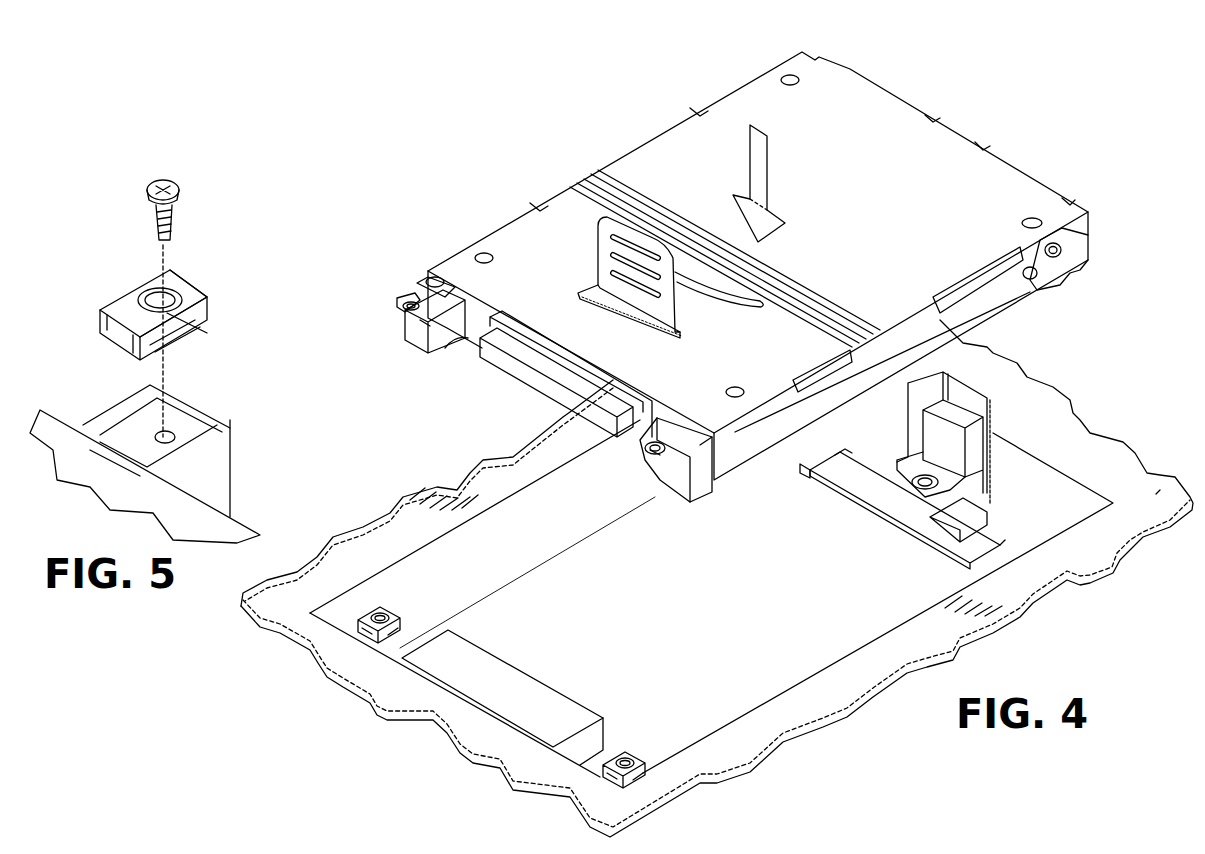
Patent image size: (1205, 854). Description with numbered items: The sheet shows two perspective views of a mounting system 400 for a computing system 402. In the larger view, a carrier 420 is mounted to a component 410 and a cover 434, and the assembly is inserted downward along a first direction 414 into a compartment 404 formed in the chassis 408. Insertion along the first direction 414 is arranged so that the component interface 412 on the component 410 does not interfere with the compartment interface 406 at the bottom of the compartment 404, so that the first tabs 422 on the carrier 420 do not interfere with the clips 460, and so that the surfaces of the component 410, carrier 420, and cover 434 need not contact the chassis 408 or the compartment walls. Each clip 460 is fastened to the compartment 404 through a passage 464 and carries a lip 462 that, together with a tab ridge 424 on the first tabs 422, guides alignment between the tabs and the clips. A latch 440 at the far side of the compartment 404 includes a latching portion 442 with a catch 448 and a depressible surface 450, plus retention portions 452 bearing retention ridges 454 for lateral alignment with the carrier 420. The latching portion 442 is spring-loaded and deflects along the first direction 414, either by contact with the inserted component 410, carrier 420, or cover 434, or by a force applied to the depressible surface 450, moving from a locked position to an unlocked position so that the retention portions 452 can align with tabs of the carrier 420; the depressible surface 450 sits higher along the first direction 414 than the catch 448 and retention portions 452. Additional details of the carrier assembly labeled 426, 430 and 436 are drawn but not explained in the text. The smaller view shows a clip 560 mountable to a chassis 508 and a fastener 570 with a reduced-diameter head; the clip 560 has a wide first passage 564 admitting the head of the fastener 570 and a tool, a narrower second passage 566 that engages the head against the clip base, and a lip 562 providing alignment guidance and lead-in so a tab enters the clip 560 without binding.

In FIG. 4, the mounting system 400 is at (445, 158).
In FIG. 4, the computing system 402 is at (1108, 412).
In FIG. 4, the compartment 404 is at (500, 512).
In FIG. 4, the compartment interface 406 is at (510, 672).
In FIG. 4, the chassis 408 is at (1158, 492).
In FIG. 4, the component 410 is at (970, 128).
In FIG. 4, the component interface 412 is at (535, 388).
In FIG. 4, the first direction 414 is at (770, 166).
In FIG. 4, the carrier 420 is at (688, 488).
In FIG. 4, the first tabs 422 is at (424, 345).
In FIG. 4, the tab ridge 424 is at (400, 294).
In FIG. 4, the screw hole 426 is at (402, 311).
In FIG. 4, the side rail bracket 430 is at (1060, 290).
In FIG. 4, the cover 434 is at (635, 160).
In FIG. 4, the spring latch 436 is at (596, 252).
In FIG. 4, the latch 440 is at (880, 528).
In FIG. 4, the latching portion 442 is at (965, 487).
In FIG. 4, the catch 448 is at (902, 468).
In FIG. 4, the depressible surface 450 is at (960, 395).
In FIG. 4, the retention portions 452 is at (840, 482).
In FIG. 4, the retention ridges 454 is at (800, 470).
In FIG. 4, the clip 460 is at (362, 636).
In FIG. 4, the lip 462 is at (392, 614).
In FIG. 4, the passage 464 is at (374, 612).
In FIG. 5, the chassis 508 is at (105, 492).
In FIG. 5, the clip 560 is at (120, 343).
In FIG. 5, the lip 562 is at (205, 285).
In FIG. 5, the first passage 564 is at (142, 290).
In FIG. 5, the second passage 566 is at (185, 342).
In FIG. 5, the fastener 570 is at (180, 218).